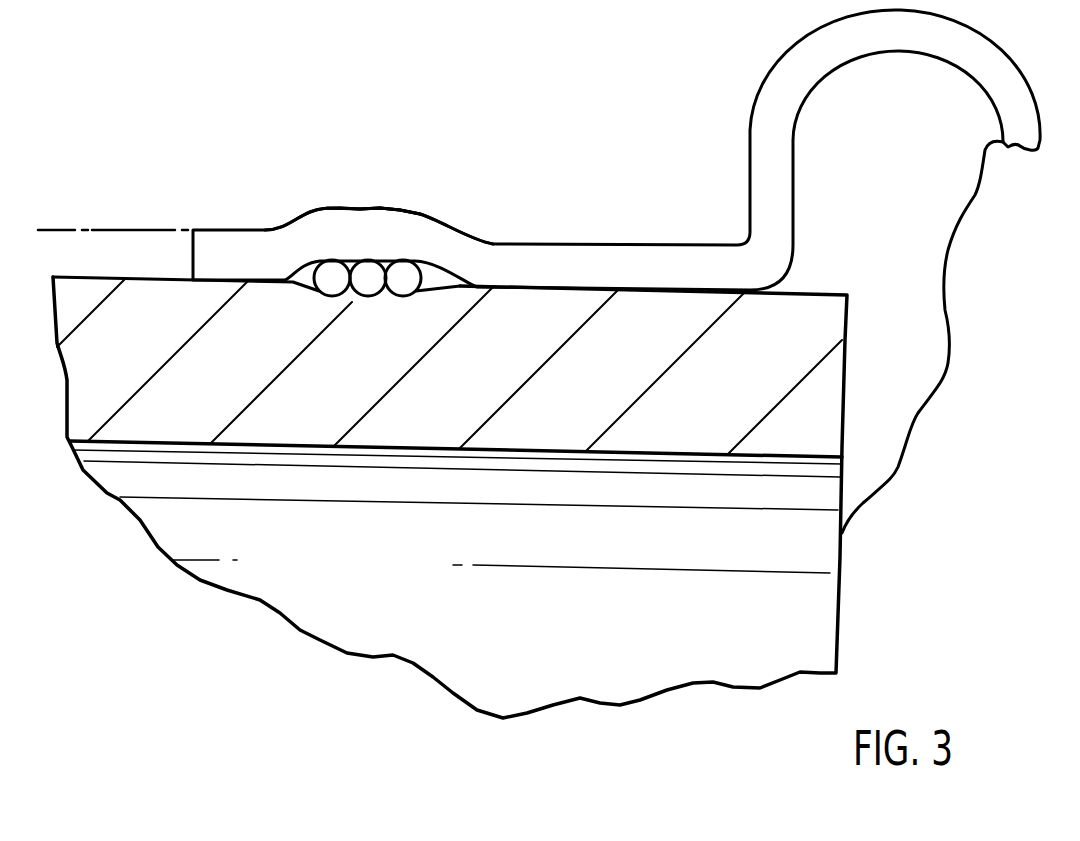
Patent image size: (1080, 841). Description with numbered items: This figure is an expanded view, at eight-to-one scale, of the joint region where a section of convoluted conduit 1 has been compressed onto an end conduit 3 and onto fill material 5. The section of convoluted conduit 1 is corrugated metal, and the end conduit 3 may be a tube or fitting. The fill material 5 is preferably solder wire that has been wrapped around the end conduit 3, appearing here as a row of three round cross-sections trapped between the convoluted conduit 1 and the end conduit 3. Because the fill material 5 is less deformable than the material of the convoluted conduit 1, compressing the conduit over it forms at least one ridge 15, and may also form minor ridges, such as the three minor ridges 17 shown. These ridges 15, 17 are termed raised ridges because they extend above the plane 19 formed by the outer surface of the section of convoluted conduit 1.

The section of convoluted conduit 1 is at (563, 244).
The end conduit 3 is at (476, 466).
The fill material 5 is at (415, 258).
The ridge 15 is at (301, 200).
The minor ridges 17 is at (410, 198).
The plane 19 is at (152, 230).